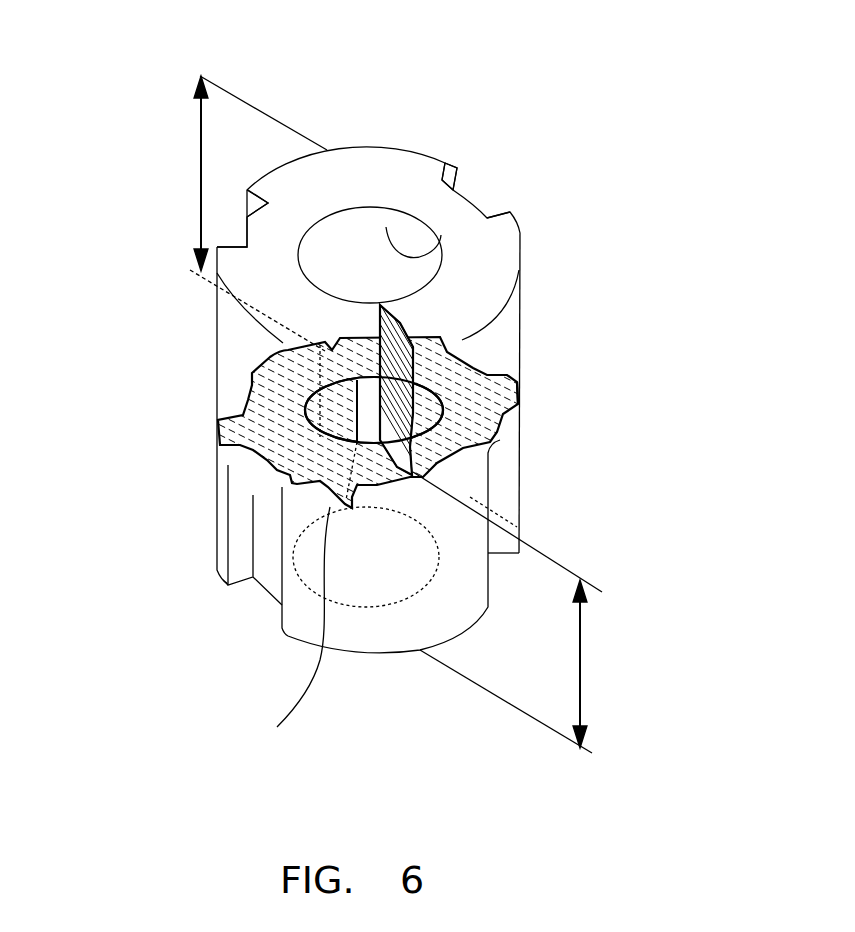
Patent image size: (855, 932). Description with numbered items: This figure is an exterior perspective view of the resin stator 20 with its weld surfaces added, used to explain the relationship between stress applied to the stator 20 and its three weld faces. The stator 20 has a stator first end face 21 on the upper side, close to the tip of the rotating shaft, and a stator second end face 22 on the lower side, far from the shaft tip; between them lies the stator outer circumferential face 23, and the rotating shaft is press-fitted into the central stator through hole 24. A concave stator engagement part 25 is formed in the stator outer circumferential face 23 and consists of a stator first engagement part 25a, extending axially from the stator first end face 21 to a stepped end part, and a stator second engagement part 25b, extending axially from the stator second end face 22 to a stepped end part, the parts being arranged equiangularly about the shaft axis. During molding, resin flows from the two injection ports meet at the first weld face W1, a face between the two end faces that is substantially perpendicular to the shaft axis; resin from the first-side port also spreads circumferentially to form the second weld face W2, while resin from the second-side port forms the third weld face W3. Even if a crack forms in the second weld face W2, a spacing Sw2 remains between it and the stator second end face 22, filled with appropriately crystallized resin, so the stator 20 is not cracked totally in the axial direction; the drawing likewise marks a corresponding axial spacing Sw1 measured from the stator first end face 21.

The stator 20 is at (504, 82).
The stator first end face 21 is at (505, 240).
The stator second end face 22 is at (277, 645).
The stator outer circumferential face 23 is at (223, 367).
The stator through hole 24 is at (386, 227).
The stator engagement part 25 is at (350, 395).
The stator first engagement part 25a is at (247, 220).
The stator second engagement part 25b is at (262, 603).
The first weld face W1 is at (425, 452).
The second weld face W2 is at (522, 360).
The third weld face W3 is at (307, 547).
The upper slit depth Sw1 is at (240, 213).
The spacing Sw2 is at (507, 612).